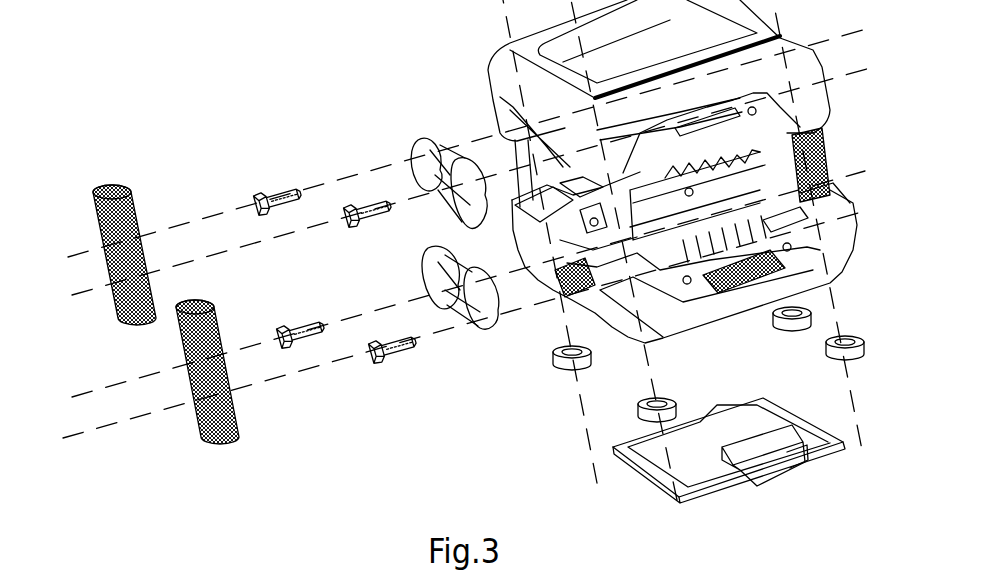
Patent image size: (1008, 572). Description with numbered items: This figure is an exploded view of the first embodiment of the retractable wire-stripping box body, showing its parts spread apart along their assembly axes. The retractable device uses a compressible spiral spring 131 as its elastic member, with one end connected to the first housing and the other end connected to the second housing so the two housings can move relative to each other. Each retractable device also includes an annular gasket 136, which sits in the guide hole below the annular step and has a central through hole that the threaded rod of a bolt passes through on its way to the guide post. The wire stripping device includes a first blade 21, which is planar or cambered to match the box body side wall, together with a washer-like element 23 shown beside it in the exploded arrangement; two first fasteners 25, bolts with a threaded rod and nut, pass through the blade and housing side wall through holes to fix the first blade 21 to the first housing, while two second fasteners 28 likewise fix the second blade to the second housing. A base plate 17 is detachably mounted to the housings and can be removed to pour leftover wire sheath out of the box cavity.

The base plate 17 is at (643, 463).
The first blade 21 is at (423, 285).
The lock washer 23 is at (423, 175).
The first fastener 25 is at (322, 330).
The second fastener 28 is at (280, 198).
The compressible spiral spring 131 is at (110, 183).
The annular gasket 136 is at (560, 368).